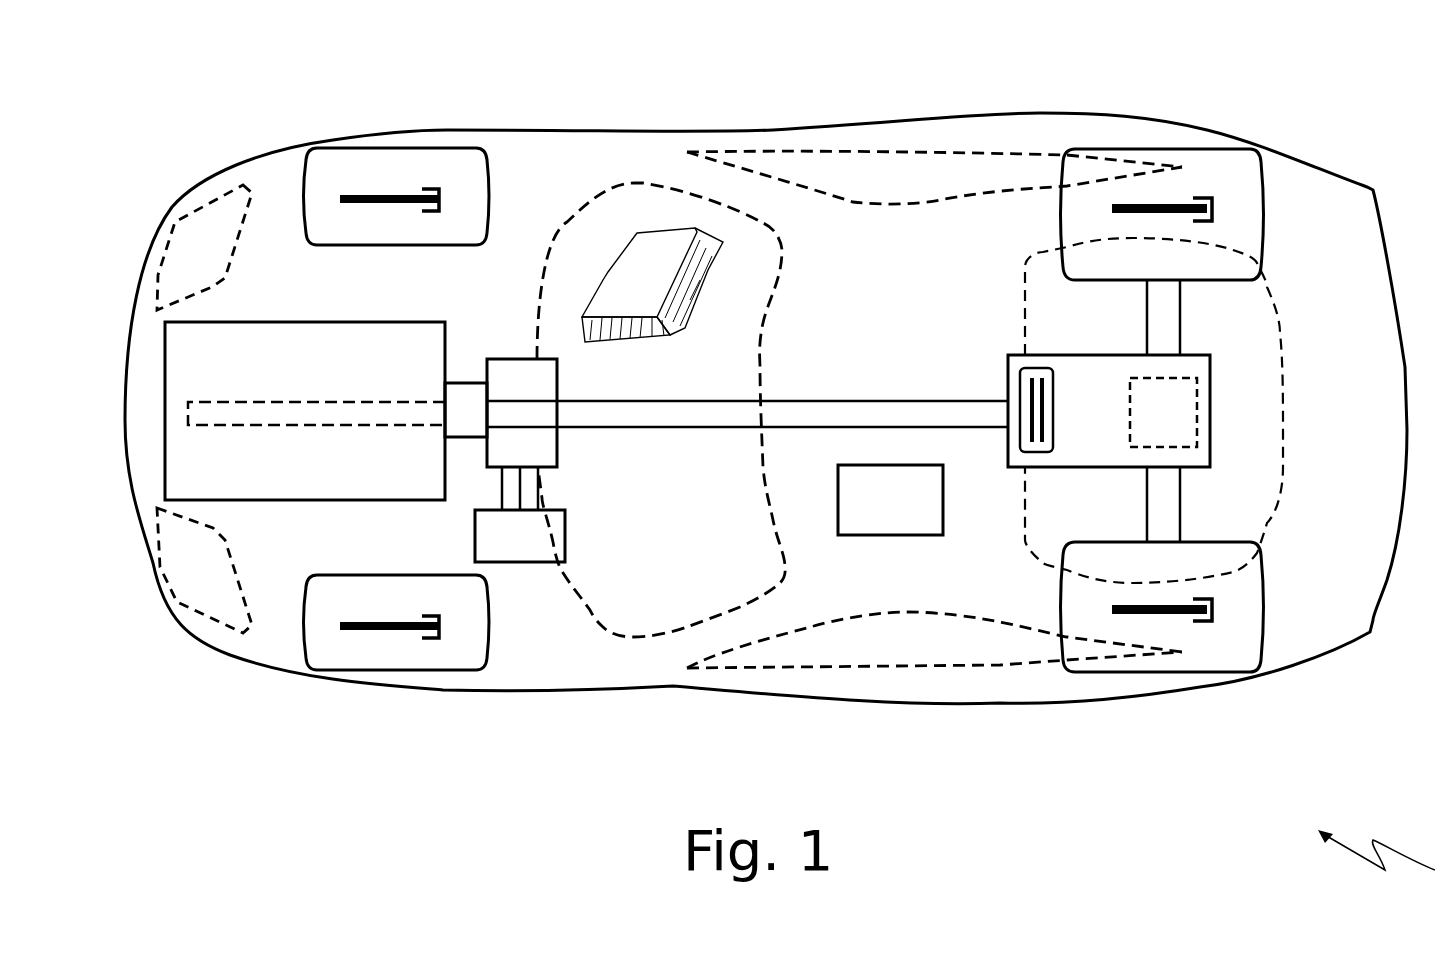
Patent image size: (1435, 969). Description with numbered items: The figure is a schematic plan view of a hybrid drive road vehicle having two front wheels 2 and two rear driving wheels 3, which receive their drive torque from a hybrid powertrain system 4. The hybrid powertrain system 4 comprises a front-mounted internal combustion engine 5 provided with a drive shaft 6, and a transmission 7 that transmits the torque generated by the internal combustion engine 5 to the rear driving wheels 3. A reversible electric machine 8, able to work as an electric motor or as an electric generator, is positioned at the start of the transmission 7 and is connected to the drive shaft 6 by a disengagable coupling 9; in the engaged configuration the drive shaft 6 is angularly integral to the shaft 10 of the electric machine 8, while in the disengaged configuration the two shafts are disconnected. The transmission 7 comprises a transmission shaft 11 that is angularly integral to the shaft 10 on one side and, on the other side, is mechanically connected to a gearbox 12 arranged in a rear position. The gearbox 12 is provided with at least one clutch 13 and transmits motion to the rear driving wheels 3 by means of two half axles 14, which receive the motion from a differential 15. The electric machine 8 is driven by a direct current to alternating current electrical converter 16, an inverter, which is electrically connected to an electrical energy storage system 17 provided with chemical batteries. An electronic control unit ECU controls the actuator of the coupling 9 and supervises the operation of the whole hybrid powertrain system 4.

The front wheels 2 is at (328, 168).
The rear driving wheels 3 is at (1245, 165).
The hybrid powertrain system 4 is at (206, 147).
The internal combustion engine 5 is at (172, 352).
The drive shaft 6 is at (292, 410).
The transmission 7 is at (799, 94).
The electric machine 8 is at (502, 372).
The disengagable coupling 9 is at (466, 410).
The shaft of the electric machine 10 is at (535, 410).
The transmission shaft 11 is at (822, 417).
The gearbox 12 is at (1017, 355).
The clutch 13 is at (1020, 455).
The half axles 14 is at (1160, 308).
The differential 15 is at (1163, 412).
The electrical converter 16 is at (520, 515).
The electrical energy storage system 17 is at (890, 500).
The electronic control unit ECU is at (635, 275).